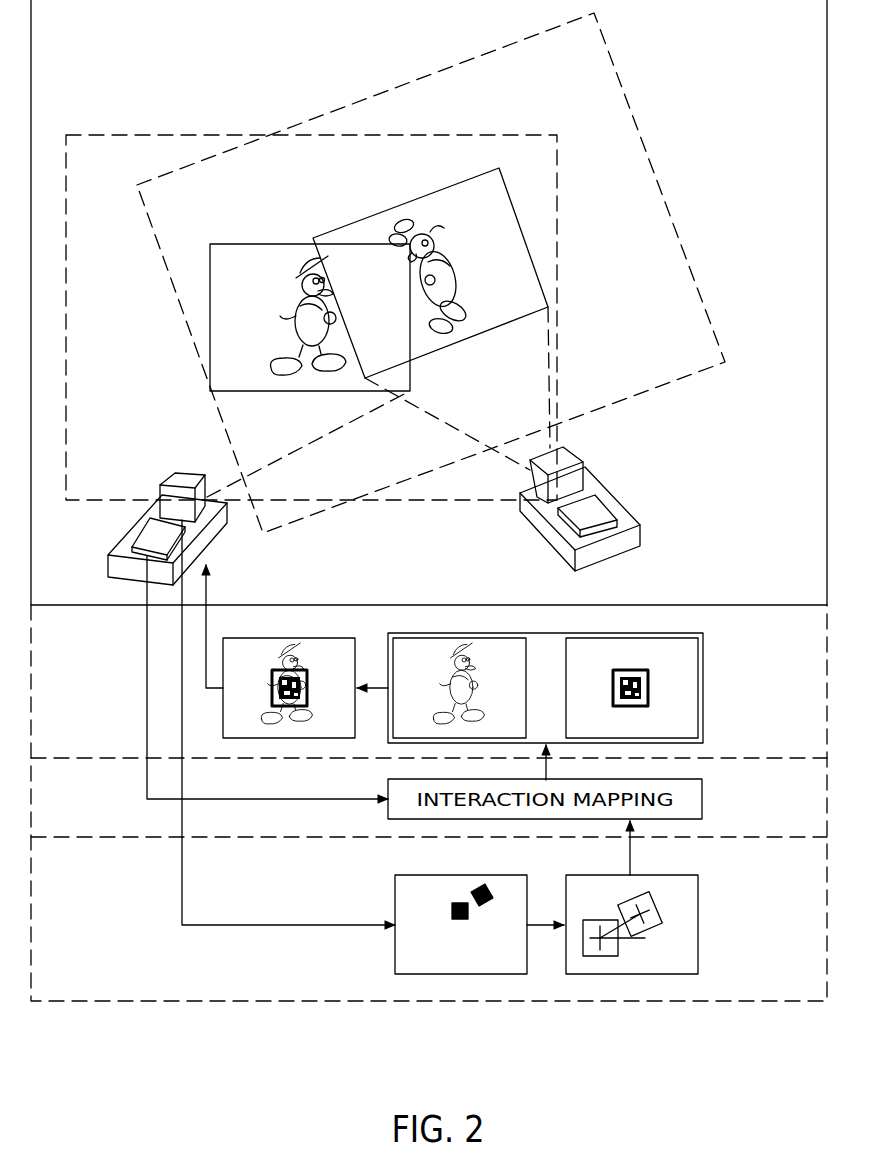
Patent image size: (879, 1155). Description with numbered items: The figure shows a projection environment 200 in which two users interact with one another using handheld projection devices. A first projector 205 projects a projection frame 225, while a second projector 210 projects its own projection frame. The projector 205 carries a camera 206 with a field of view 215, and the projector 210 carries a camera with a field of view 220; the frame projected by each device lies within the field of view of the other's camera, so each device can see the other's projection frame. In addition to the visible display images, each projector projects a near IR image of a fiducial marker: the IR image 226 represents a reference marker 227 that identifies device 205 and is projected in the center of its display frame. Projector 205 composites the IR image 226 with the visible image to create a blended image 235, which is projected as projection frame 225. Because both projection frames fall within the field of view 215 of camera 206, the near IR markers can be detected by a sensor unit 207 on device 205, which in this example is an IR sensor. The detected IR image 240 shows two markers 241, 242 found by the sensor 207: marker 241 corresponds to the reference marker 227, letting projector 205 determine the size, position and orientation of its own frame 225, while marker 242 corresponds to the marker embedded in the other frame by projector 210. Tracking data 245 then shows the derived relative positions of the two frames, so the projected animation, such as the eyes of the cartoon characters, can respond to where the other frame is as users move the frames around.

The projection environment 200 is at (737, 83).
The projector 205 is at (120, 580).
The camera 206 is at (180, 478).
The sensor unit 207 is at (150, 538).
The projector 210 is at (630, 553).
The field of view 215 is at (143, 135).
The field of view 220 is at (614, 66).
The projection frame 225 is at (234, 244).
The IR image 226 is at (680, 633).
The reference marker 227 is at (703, 723).
The blended image 235 is at (306, 638).
The detected IR image 240 is at (440, 910).
The marker 241 is at (452, 910).
The marker 242 is at (488, 889).
The tracking data 245 is at (698, 960).